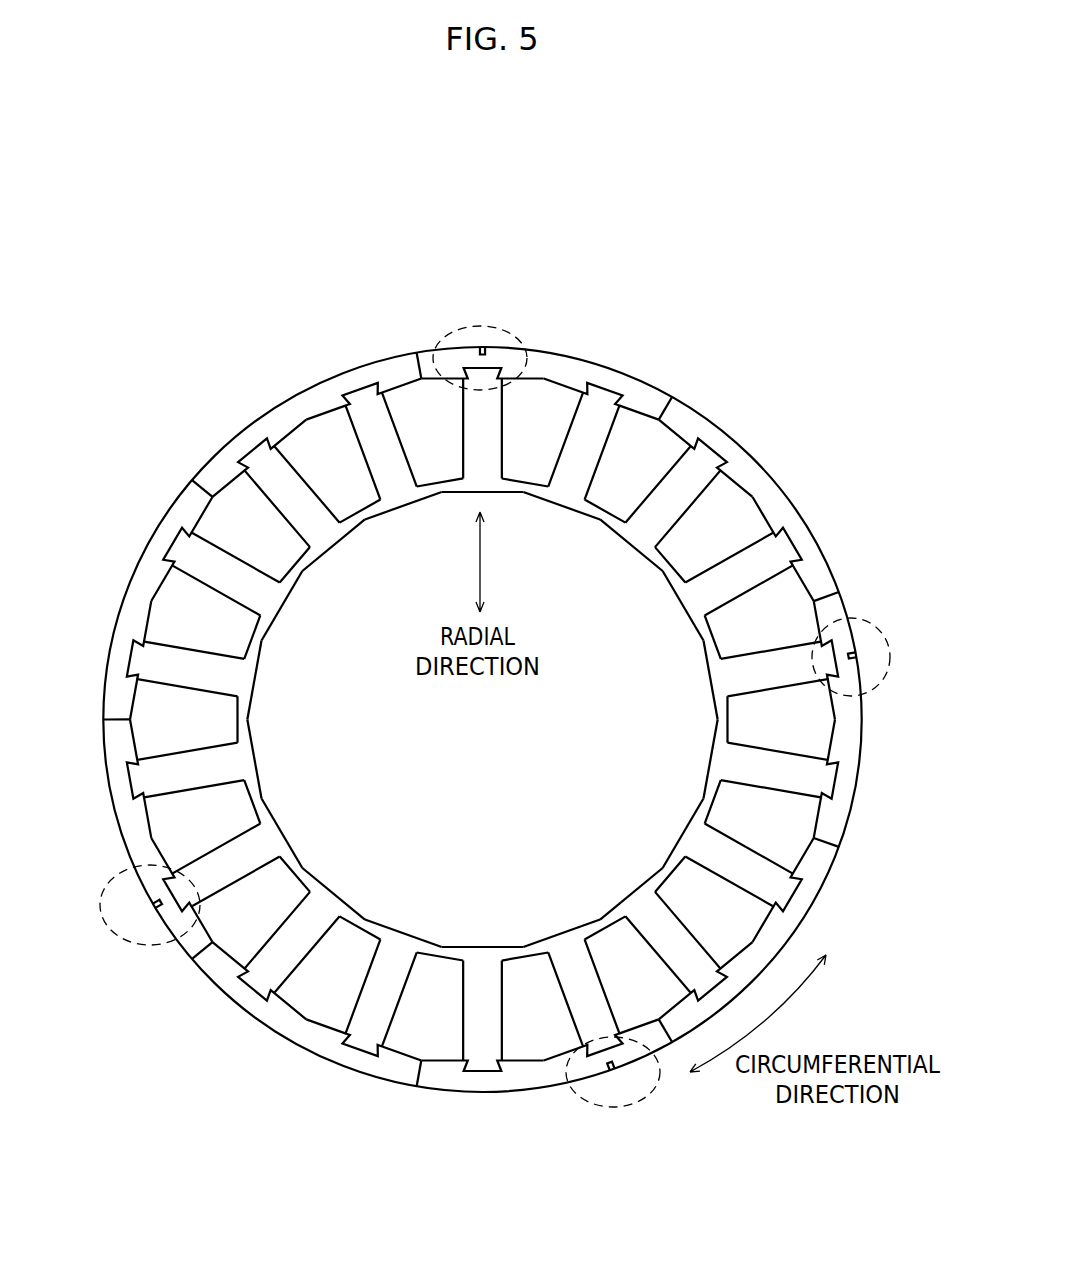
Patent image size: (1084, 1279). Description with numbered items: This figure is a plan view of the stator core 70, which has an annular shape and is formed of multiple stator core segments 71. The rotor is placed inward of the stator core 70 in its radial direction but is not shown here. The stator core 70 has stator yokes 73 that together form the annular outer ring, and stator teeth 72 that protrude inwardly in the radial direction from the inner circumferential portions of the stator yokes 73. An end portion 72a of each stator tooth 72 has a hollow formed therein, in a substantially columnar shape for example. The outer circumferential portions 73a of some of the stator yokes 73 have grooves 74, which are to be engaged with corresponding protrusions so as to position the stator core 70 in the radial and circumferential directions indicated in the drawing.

The stator core 70 is at (469, 202).
The stator core segment 71 is at (308, 393).
The stator tooth 72 is at (316, 520).
The end portion of stator tooth 72a is at (624, 551).
The stator yoke 73 is at (272, 420).
The outer circumferential portion of stator yoke 73a is at (721, 419).
The groove 74 is at (485, 337).